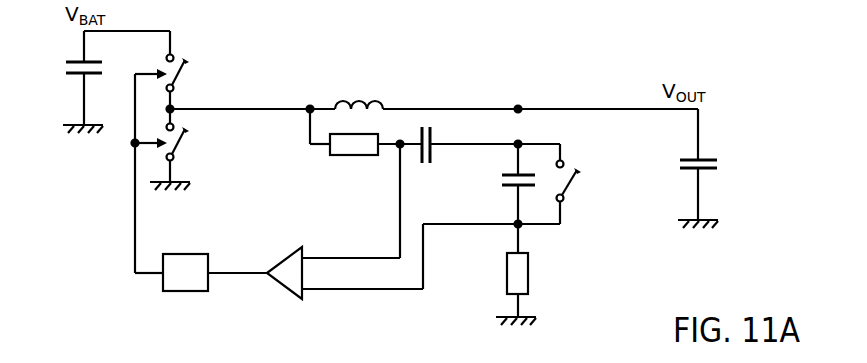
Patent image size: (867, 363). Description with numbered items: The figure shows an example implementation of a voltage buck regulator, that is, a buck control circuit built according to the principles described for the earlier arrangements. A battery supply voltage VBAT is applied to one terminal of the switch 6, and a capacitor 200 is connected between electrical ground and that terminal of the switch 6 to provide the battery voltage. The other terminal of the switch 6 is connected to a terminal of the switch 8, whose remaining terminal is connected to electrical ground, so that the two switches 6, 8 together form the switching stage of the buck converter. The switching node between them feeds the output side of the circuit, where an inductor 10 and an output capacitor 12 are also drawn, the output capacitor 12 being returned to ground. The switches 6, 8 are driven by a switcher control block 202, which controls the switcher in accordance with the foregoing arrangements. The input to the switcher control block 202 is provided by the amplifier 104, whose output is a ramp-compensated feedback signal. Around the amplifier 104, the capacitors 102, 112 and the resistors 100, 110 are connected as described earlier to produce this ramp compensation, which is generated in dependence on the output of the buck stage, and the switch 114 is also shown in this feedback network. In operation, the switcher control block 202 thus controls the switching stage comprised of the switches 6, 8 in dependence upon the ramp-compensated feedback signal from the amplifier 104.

The capacitor 200 is at (82, 61).
The switch 6 is at (178, 75).
The switch 8 is at (178, 145).
The inductor 10 is at (359, 99).
The resistor 100 is at (362, 157).
The capacitor 102 is at (435, 154).
The resistor 110 is at (510, 190).
The switch 114 is at (576, 192).
The output capacitor 12 is at (708, 158).
The amplifier 104 is at (289, 251).
The switcher control block 202 is at (177, 292).
The capacitor 112 is at (530, 273).